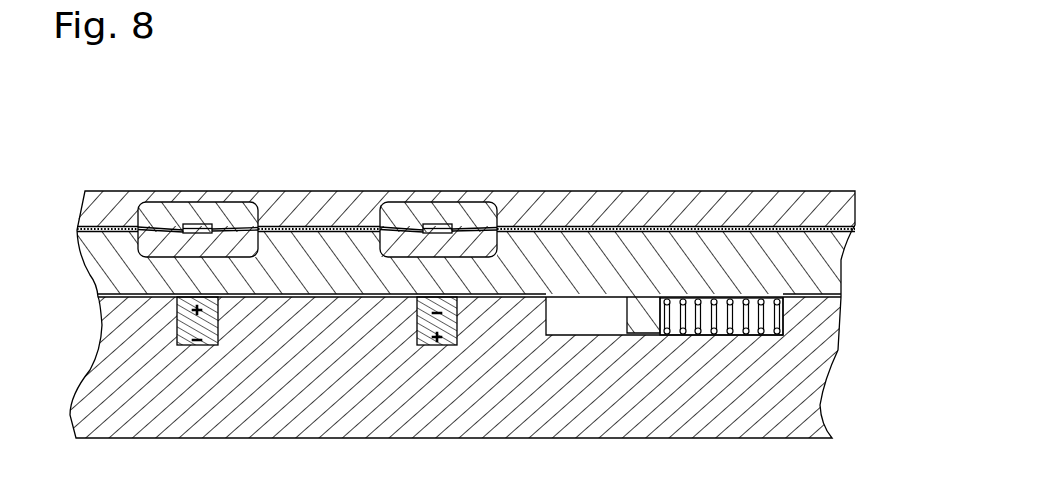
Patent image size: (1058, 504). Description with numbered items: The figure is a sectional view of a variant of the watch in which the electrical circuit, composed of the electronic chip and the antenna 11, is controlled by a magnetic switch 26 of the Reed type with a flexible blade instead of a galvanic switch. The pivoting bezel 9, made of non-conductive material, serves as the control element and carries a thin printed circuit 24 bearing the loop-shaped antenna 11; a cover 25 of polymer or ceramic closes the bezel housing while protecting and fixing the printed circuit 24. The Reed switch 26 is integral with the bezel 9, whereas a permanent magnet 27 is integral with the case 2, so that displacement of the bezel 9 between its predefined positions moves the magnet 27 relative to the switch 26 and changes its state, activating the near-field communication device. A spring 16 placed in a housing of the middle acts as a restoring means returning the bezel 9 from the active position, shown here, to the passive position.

The case 2 is at (800, 408).
The bezel 9 is at (795, 264).
The antenna 11 is at (626, 225).
The spring 16 is at (786, 312).
The printed circuit 24 is at (872, 227).
The cover 25 is at (728, 211).
The magnetic switch 26 is at (224, 209).
The permanent magnet 27 is at (430, 345).